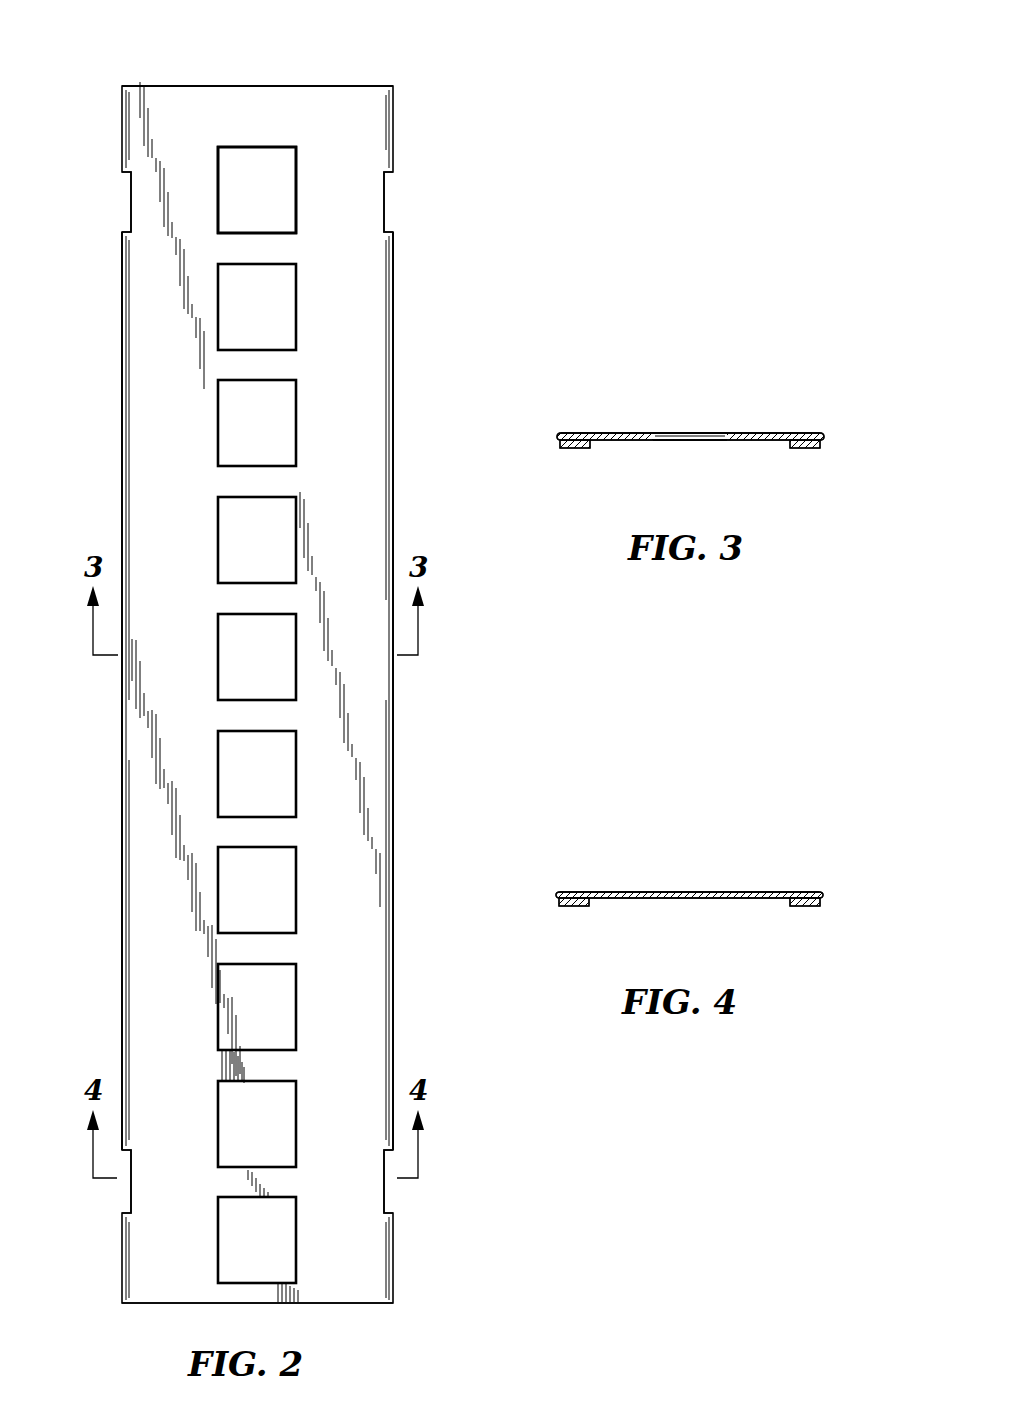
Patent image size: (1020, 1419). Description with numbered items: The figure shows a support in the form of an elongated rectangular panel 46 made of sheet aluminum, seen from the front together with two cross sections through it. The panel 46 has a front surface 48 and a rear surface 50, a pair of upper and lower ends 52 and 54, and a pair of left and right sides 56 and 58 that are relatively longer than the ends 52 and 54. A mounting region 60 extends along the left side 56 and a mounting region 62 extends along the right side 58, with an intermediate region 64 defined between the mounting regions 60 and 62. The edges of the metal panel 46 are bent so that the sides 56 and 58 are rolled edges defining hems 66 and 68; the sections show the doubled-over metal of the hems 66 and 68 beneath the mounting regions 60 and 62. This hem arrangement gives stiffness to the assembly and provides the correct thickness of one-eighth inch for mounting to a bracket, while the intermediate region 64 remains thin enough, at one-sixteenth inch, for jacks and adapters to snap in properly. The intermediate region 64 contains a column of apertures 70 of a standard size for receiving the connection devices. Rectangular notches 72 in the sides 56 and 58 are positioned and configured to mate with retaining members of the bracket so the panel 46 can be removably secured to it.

In FIG. 2, the panel 46 is at (440, 297).
In FIG. 3, the panel 46 is at (804, 280).
In FIG. 4, the panel 46 is at (572, 842).
In FIG. 2, the front surface 48 is at (257, 103).
In FIG. 3, the front surface 48 is at (640, 432).
In FIG. 4, the front surface 48 is at (655, 892).
In FIG. 3, the rear surface 50 is at (622, 442).
In FIG. 4, the rear surface 50 is at (665, 899).
In FIG. 2, the upper end 52 is at (312, 84).
In FIG. 2, the lower end 54 is at (328, 1305).
In FIG. 2, the left side 56 is at (122, 791).
In FIG. 3, the left side 56 is at (560, 438).
In FIG. 2, the right side 58 is at (393, 729).
In FIG. 3, the right side 58 is at (822, 438).
In FIG. 2, the mounting region 60 is at (164, 100).
In FIG. 3, the mounting region 60 is at (583, 395).
In FIG. 4, the mounting region 60 is at (612, 866).
In FIG. 2, the mounting region 62 is at (360, 102).
In FIG. 3, the mounting region 62 is at (796, 388).
In FIG. 4, the mounting region 62 is at (802, 848).
In FIG. 2, the intermediate region 64 is at (218, 100).
In FIG. 3, the intermediate region 64 is at (693, 405).
In FIG. 4, the intermediate region 64 is at (733, 842).
In FIG. 3, the hem 66 is at (578, 447).
In FIG. 4, the hem 66 is at (573, 905).
In FIG. 3, the hem 68 is at (800, 448).
In FIG. 4, the hem 68 is at (795, 906).
In FIG. 2, the apertures 70 is at (220, 300).
In FIG. 3, the apertures 70 is at (672, 433).
In FIG. 2, the rectangular notches 72 is at (388, 174).
In FIG. 4, the rectangular notches 72 is at (558, 893).